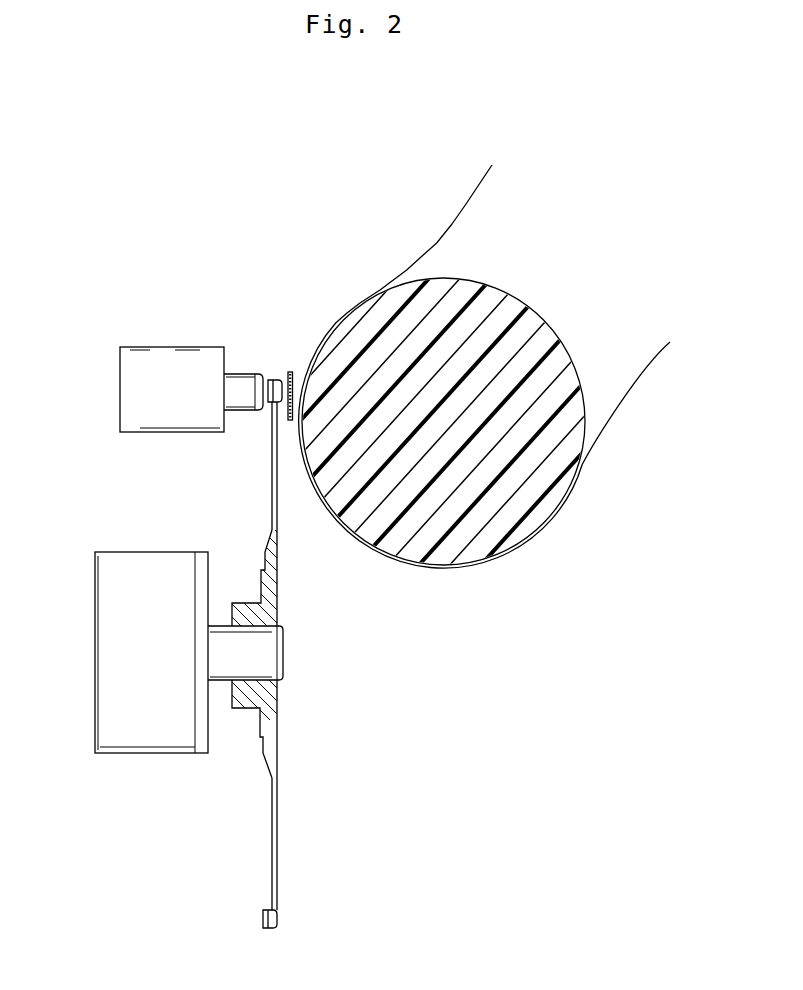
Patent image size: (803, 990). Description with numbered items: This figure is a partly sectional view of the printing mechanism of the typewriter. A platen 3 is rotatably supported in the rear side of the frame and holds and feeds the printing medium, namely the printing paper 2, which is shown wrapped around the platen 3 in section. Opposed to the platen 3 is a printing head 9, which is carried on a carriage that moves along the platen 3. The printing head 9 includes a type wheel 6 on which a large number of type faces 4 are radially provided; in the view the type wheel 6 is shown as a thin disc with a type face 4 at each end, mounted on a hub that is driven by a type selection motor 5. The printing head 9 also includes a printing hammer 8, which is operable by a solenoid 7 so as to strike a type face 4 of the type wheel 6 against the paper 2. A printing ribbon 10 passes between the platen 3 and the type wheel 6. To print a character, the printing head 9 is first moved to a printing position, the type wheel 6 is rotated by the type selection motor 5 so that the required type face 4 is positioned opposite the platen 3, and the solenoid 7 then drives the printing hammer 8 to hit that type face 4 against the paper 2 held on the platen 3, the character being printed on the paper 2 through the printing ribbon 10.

The printing paper 2 is at (437, 242).
The platen 3 is at (361, 316).
The type faces 4 is at (279, 380).
The type selection motor 5 is at (142, 552).
The type wheel 6 is at (278, 596).
The solenoid 7 is at (160, 347).
The printing hammer 8 is at (240, 374).
The printing head 9 is at (154, 388).
The printing ribbon 10 is at (291, 421).